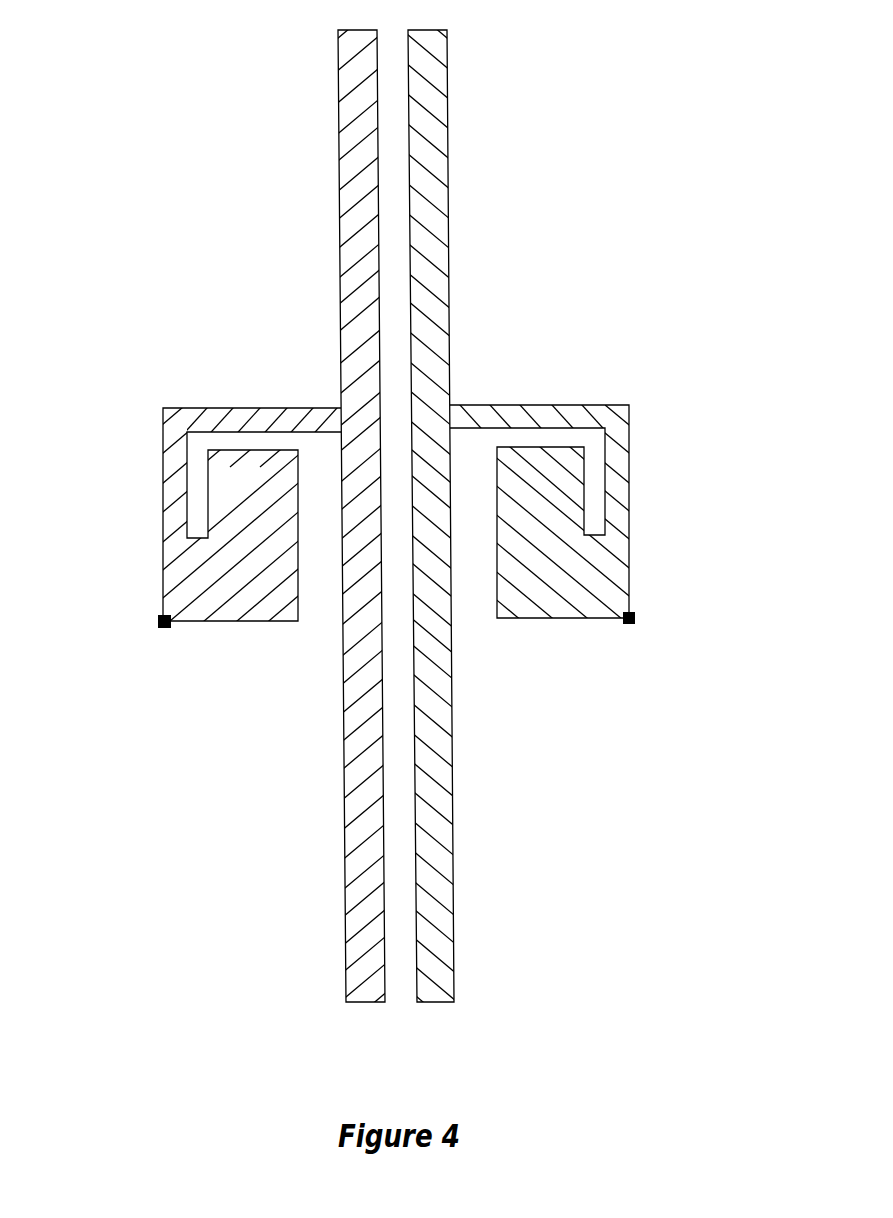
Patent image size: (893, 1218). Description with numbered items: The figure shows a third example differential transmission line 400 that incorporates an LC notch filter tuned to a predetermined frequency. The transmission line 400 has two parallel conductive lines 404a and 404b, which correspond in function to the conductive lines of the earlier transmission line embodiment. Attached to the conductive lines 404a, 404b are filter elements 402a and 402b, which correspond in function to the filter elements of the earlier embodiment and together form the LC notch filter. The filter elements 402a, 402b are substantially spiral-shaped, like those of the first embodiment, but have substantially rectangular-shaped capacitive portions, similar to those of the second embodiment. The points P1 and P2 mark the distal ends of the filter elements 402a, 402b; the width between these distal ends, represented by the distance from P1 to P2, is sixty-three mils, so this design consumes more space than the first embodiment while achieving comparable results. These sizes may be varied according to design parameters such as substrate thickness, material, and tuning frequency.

The transmission line 400 is at (593, 807).
The conductive line 404a is at (337, 234).
The conductive line 404b is at (452, 200).
The filter element 402a is at (158, 458).
The filter element 402b is at (632, 491).
The distal end point P1 is at (171, 639).
The distal end point P2 is at (629, 634).